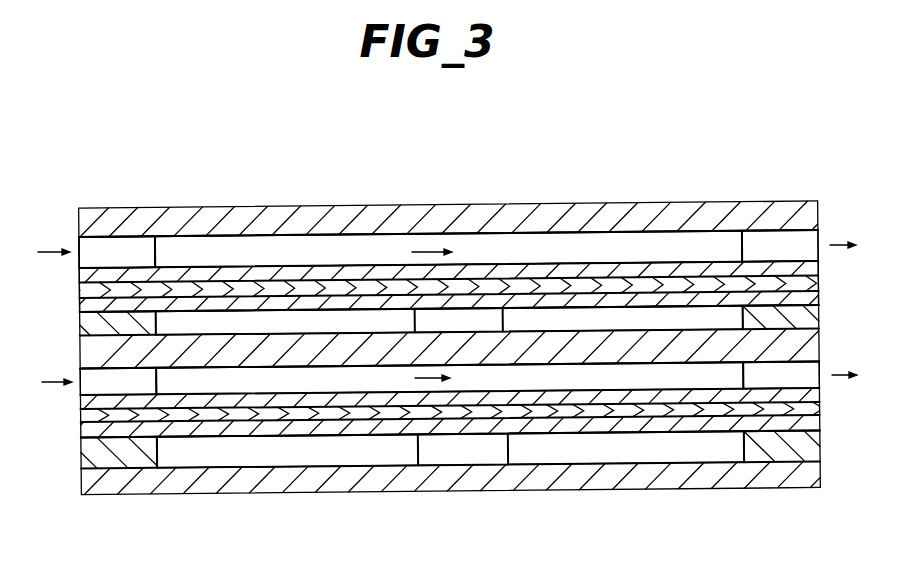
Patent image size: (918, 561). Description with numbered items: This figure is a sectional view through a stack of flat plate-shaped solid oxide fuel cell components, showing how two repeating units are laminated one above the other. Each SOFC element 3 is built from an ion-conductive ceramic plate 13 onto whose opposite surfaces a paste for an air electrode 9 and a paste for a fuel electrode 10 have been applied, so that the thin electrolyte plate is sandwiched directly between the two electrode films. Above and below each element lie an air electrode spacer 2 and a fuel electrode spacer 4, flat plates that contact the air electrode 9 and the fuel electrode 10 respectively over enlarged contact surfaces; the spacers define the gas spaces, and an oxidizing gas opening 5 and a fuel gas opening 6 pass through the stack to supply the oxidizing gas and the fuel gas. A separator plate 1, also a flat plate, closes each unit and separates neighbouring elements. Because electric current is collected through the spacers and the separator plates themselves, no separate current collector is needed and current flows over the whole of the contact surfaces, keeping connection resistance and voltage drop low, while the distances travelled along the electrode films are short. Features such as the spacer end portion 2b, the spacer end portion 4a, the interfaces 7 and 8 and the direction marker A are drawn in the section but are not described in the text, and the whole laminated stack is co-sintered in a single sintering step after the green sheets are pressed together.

The separator plate 1 is at (462, 215).
The air electrode spacer 2 is at (205, 250).
The liquid crystal layer end portion 2b is at (133, 250).
The SOFC element 3 is at (70, 267).
The fuel electrode spacer 4 is at (253, 317).
The sealing portion 4a is at (84, 322).
The oxidizing gas opening 5 is at (96, 237).
The fuel gas opening 6 is at (503, 326).
The interface layer 7 is at (330, 239).
The boundary layer 8 is at (373, 307).
The air electrode 9 is at (820, 268).
The fuel electrode 10 is at (813, 297).
The ion-conductive ceramic plate 13 is at (820, 282).
The light incidence direction A is at (50, 250).